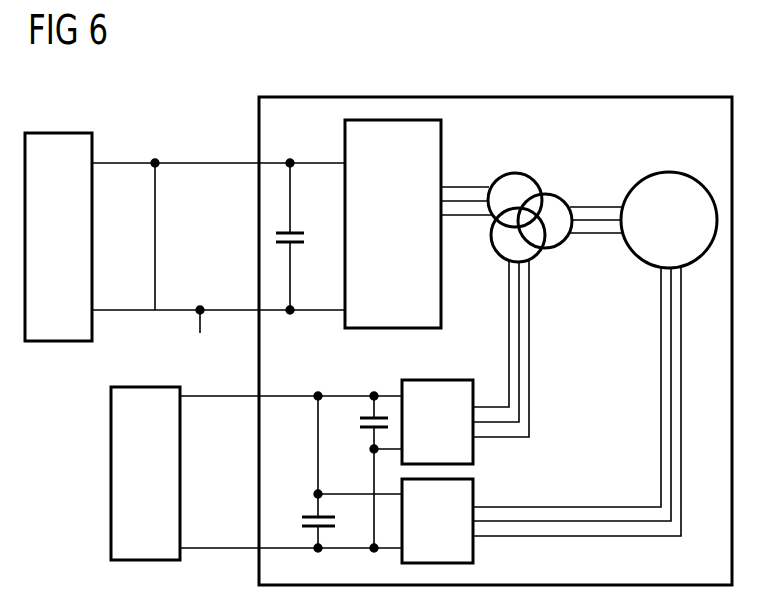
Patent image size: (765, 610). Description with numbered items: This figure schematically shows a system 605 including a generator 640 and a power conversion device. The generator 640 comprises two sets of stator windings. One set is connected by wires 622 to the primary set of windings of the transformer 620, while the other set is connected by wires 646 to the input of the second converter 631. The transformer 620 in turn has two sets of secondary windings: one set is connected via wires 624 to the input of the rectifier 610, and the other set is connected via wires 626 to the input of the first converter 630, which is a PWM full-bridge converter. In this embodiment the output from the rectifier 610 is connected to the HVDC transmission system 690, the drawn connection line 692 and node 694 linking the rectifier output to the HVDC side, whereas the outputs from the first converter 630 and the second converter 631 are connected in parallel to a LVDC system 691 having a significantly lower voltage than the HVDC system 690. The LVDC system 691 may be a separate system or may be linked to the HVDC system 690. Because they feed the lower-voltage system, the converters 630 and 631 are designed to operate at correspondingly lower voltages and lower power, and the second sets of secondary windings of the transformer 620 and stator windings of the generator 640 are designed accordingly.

The system 605 is at (172, 126).
The rectifier 610 is at (345, 137).
The transformer 620 is at (548, 194).
The wires 622 is at (596, 237).
The wires 624 is at (463, 186).
The wires 626 is at (530, 322).
The first converter 630 is at (475, 450).
The second converter 631 is at (475, 549).
The generator 640 is at (668, 171).
The machine connection lines 646 is at (661, 358).
The HVDC transmission system 690 is at (60, 341).
The LVDC system 691 is at (111, 480).
The connection line 692 is at (157, 250).
The connection node 694 is at (198, 318).